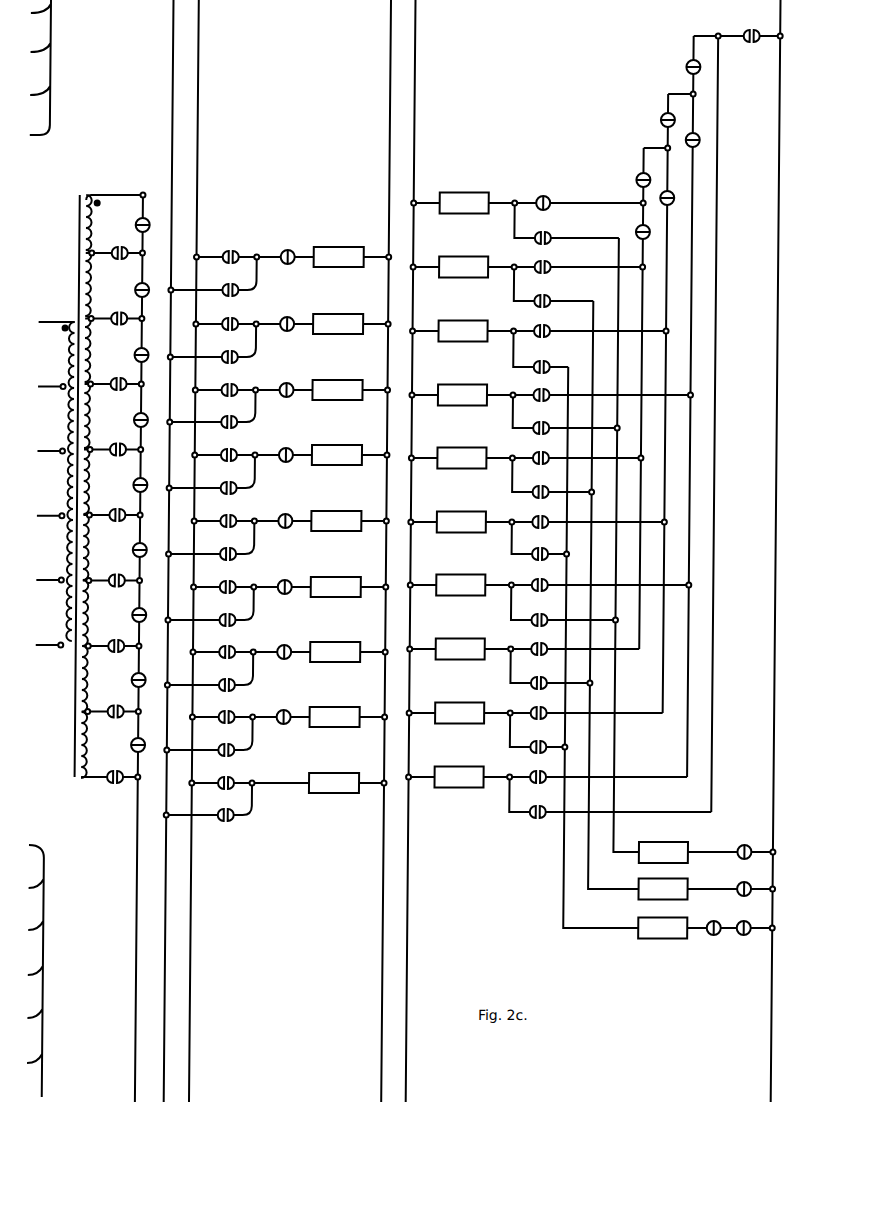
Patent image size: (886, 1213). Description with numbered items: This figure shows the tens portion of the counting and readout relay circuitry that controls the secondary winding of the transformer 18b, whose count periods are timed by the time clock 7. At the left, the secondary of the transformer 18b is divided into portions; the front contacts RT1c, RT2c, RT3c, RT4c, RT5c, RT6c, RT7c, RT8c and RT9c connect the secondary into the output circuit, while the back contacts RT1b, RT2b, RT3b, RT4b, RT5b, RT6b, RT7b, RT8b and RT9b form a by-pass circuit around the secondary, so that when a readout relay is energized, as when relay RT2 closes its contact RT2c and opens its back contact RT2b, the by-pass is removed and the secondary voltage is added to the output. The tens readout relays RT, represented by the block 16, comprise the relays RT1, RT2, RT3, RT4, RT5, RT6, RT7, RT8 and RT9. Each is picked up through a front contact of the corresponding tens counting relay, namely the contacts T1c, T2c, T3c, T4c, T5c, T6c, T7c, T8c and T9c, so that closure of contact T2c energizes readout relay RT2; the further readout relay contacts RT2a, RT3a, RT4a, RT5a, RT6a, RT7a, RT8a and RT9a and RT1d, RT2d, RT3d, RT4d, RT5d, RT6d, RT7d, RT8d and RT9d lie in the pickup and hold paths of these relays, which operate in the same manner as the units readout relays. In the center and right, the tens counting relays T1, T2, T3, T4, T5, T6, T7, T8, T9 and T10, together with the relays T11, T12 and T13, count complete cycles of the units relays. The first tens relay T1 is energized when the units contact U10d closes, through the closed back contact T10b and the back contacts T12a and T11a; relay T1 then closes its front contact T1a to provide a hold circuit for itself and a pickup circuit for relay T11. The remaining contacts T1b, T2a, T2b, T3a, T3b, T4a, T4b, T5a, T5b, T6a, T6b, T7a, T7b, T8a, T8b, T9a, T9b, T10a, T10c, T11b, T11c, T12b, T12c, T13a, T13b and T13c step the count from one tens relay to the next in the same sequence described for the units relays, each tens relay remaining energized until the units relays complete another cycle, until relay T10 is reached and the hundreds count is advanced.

The readout relays 16 is at (278, 511).
The tens readout relays RT is at (320, 479).
The time clock 7 is at (593, 486).
The transformer 18b is at (70, 772).
The tens readout relay RT1 is at (339, 257).
The tens readout relay RT2 is at (338, 324).
The tens readout relay RT3 is at (337, 390).
The tens readout relay RT4 is at (337, 455).
The tens readout relay RT5 is at (336, 521).
The tens readout relay RT6 is at (336, 587).
The tens readout relay RT7 is at (335, 652).
The tens readout relay RT8 is at (335, 717).
The tens readout relay RT9 is at (334, 783).
The tens counting relay T1 is at (464, 203).
The tens counting relay T2 is at (463, 267).
The tens counting relay T3 is at (462, 331).
The tens counting relay T4 is at (462, 395).
The tens counting relay T5 is at (461, 458).
The tens counting relay T6 is at (461, 522).
The tens counting relay T7 is at (460, 585).
The tens counting relay T8 is at (460, 649).
The tens counting relay T9 is at (459, 713).
The tens counting relay T10 is at (458, 777).
The tens auxiliary relay T11 is at (663, 852).
The tens auxiliary relay T12 is at (662, 889).
The tens auxiliary relay T13 is at (662, 928).
The relay RT1 contact b RT1b is at (138, 225).
The relay RT1 contact c RT1c is at (131, 249).
The relay RT1 contact d RT1d is at (262, 297).
The relay RT2 contact a RT2a is at (290, 248).
The back contact of readout relay RT2 RT2b is at (138, 290).
The front contact of readout relay RT2 RT2c is at (131, 314).
The relay RT2 contact d RT2d is at (262, 364).
The relay RT3 contact a RT3a is at (290, 317).
The relay RT3 contact b RT3b is at (138, 355).
The relay RT3 contact c RT3c is at (131, 380).
The relay RT3 contact d RT3d is at (262, 429).
The relay RT4 contact a RT4a is at (290, 383).
The relay RT4 contact b RT4b is at (138, 420).
The relay RT4 contact c RT4c is at (131, 446).
The relay RT4 contact d RT4d is at (262, 495).
The relay RT5 contact a RT5a is at (290, 448).
The relay RT5 contact b RT5b is at (138, 485).
The relay RT5 contact c RT5c is at (131, 511).
The relay RT5 contact d RT5d is at (262, 561).
The relay RT6 contact a RT6a is at (290, 514).
The relay RT6 contact b RT6b is at (138, 550).
The relay RT6 contact c RT6c is at (131, 576).
The relay RT6 contact d RT6d is at (262, 627).
The relay RT7 contact a RT7a is at (290, 580).
The relay RT7 contact b RT7b is at (138, 615).
The relay RT7 contact c RT7c is at (131, 642).
The relay RT7 contact d RT7d is at (262, 692).
The relay RT8 contact a RT8a is at (290, 645).
The relay RT8 contact b RT8b is at (138, 680).
The relay RT8 contact c RT8c is at (131, 708).
The relay RT8 contact d RT8d is at (262, 757).
The relay RT9 contact a RT9a is at (290, 710).
The relay RT9 contact b RT9b is at (138, 745).
The relay RT9 contact c RT9c is at (103, 786).
The relay RT9 contact d RT9d is at (246, 827).
The front contact of relay T1 T1a is at (550, 234).
The relay T1 contact b T1b is at (535, 262).
The relay T1 contact c T1c is at (231, 247).
The relay T2 contact a T2a is at (551, 298).
The relay T2 contact b T2b is at (535, 327).
The front contact of relay T2 T2c is at (237, 319).
The relay T3 contact a T3a is at (543, 364).
The relay T3 contact b T3b is at (534, 390).
The relay T3 contact c T3c is at (237, 385).
The relay T4 contact a T4a is at (534, 429).
The relay T4 contact b T4b is at (534, 454).
The relay T4 contact c T4c is at (237, 450).
The relay T5 contact a T5a is at (534, 492).
The relay T5 contact b T5b is at (534, 513).
The relay T5 contact c T5c is at (237, 516).
The relay T6 contact a T6a is at (534, 554).
The relay T6 contact b T6b is at (534, 579).
The relay T6 contact c T6c is at (237, 582).
The relay T7 contact a T7a is at (534, 619).
The relay T7 contact b T7b is at (534, 643).
The relay T7 contact c T7c is at (237, 647).
The relay T8 contact a T8a is at (534, 683).
The relay T8 contact b T8b is at (534, 704).
The relay T8 contact c T8c is at (237, 712).
The relay T9 contact a T9a is at (534, 747).
The relay T9 contact b T9b is at (534, 767).
The relay T9 contact c T9c is at (237, 778).
The relay T10 contact a T10a is at (537, 819).
The back contact of relay T10 T10b is at (687, 67).
The relay T10 contact c T10c is at (749, 921).
The back contact of relay T11 T11a is at (548, 192).
The relay T11 contact b T11b is at (638, 232).
The relay T11 contact c T11c is at (722, 935).
The back contact of relay T12 T12a is at (638, 180).
The relay T12 contact b T12b is at (676, 198).
The relay T12 contact c T12c is at (752, 846).
The relay T13 contact a T13a is at (662, 120).
The relay T13 contact b T13b is at (701, 140).
The relay T13 contact c T13c is at (751, 884).
The contact of units count relay U10d is at (749, 27).